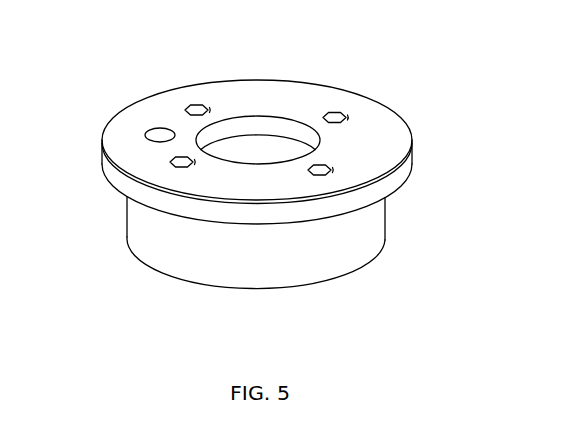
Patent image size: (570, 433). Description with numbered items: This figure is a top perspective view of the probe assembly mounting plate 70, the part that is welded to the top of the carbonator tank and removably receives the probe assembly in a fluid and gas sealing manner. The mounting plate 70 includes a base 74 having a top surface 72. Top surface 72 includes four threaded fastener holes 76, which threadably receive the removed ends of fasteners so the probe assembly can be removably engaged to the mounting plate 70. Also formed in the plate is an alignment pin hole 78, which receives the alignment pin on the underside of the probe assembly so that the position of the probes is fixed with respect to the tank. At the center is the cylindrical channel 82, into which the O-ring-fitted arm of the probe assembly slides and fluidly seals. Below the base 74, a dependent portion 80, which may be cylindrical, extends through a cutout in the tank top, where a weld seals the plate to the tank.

The probe assembly mounting plate 70 is at (284, 157).
The top surface 72 is at (283, 112).
The base 74 is at (430, 152).
The threaded fastener holes 76 is at (343, 114).
The alignment pin hole 78 is at (152, 128).
The dependent portion 80 is at (378, 232).
The cylindrical channel 82 is at (268, 148).